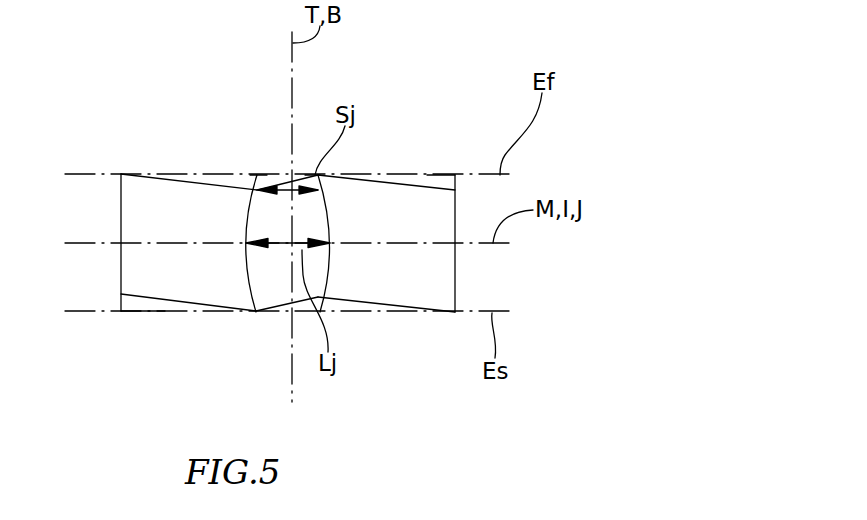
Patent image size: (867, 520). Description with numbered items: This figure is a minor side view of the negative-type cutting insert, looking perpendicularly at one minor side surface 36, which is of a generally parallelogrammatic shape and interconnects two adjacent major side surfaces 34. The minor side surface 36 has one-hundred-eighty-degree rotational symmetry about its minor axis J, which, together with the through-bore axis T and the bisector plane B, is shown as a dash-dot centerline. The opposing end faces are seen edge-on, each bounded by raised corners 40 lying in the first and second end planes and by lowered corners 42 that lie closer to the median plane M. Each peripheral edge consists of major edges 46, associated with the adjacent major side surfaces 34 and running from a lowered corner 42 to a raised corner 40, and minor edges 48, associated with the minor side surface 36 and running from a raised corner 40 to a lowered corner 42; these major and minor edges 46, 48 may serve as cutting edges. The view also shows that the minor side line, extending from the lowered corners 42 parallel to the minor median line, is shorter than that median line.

The major side surface 34 is at (390, 243).
The minor side surface 36 is at (100, 267).
The raised corner 40 is at (123, 175).
The lowered corner 42 is at (477, 175).
The major edge 46 is at (222, 175).
The minor edge 48 is at (277, 175).